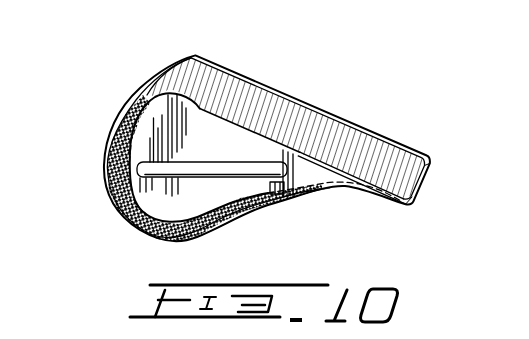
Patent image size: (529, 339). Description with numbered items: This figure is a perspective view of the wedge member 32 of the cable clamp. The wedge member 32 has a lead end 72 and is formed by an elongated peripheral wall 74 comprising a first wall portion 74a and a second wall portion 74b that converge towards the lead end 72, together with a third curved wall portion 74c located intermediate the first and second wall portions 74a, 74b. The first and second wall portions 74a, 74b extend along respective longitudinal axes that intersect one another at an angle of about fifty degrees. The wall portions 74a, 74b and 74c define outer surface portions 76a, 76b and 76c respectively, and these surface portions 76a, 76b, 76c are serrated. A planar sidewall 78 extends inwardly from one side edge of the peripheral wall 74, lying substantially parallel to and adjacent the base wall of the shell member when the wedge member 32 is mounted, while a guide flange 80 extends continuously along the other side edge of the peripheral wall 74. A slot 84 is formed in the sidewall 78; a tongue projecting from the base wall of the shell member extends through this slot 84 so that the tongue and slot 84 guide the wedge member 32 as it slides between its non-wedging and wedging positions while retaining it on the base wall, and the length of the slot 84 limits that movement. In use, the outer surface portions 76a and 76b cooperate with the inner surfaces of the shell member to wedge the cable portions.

The wedge member 32 is at (424, 96).
The lead end 72 is at (378, 196).
The elongated peripheral wall 74 is at (330, 137).
The first wall portion 74a is at (275, 112).
The second wall portion 74b is at (248, 215).
The third curved wall portion 74c is at (107, 157).
The outer surface portion 76a is at (250, 97).
The outer surface portion 76b is at (216, 228).
The outer surface portion 76c is at (105, 182).
The planar sidewall 78 is at (172, 196).
The guide flange 80 is at (421, 160).
The slot 84 is at (208, 170).